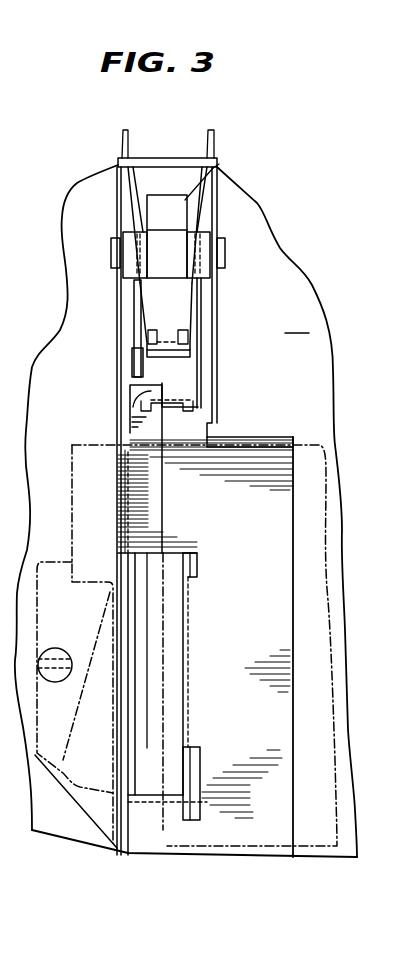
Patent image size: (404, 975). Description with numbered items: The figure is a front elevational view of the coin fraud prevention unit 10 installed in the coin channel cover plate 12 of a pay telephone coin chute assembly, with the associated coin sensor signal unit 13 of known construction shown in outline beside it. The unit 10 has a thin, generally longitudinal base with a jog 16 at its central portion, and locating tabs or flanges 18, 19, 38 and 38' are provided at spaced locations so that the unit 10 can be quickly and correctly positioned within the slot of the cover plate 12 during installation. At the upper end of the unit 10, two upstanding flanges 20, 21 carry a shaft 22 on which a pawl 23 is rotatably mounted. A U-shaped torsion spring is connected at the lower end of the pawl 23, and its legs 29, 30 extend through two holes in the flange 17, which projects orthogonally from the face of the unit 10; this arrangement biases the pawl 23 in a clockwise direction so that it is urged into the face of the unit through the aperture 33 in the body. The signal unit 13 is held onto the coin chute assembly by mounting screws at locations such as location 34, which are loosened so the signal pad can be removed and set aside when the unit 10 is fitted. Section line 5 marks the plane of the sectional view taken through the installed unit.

The section line 5- 5 is at (110, 117).
The coin fraud prevention unit 10 is at (257, 426).
The coin channel cover plate 12 is at (186, 511).
The coin sensor signal unit 13 is at (74, 501).
The jog 16 is at (240, 525).
The flange 17 is at (164, 153).
The flange 18 is at (186, 692).
The flange 19 is at (145, 797).
The upstanding flange 20 is at (119, 211).
The upstanding flange 21 is at (218, 213).
The shaft 22 is at (226, 263).
The pawl 23 is at (216, 165).
The spring leg 29 is at (141, 289).
The spring leg 30 is at (193, 288).
The aperture 33 is at (167, 378).
The mounting screw location 34 is at (52, 683).
The flange 38 is at (129, 466).
The flange 38' is at (104, 360).